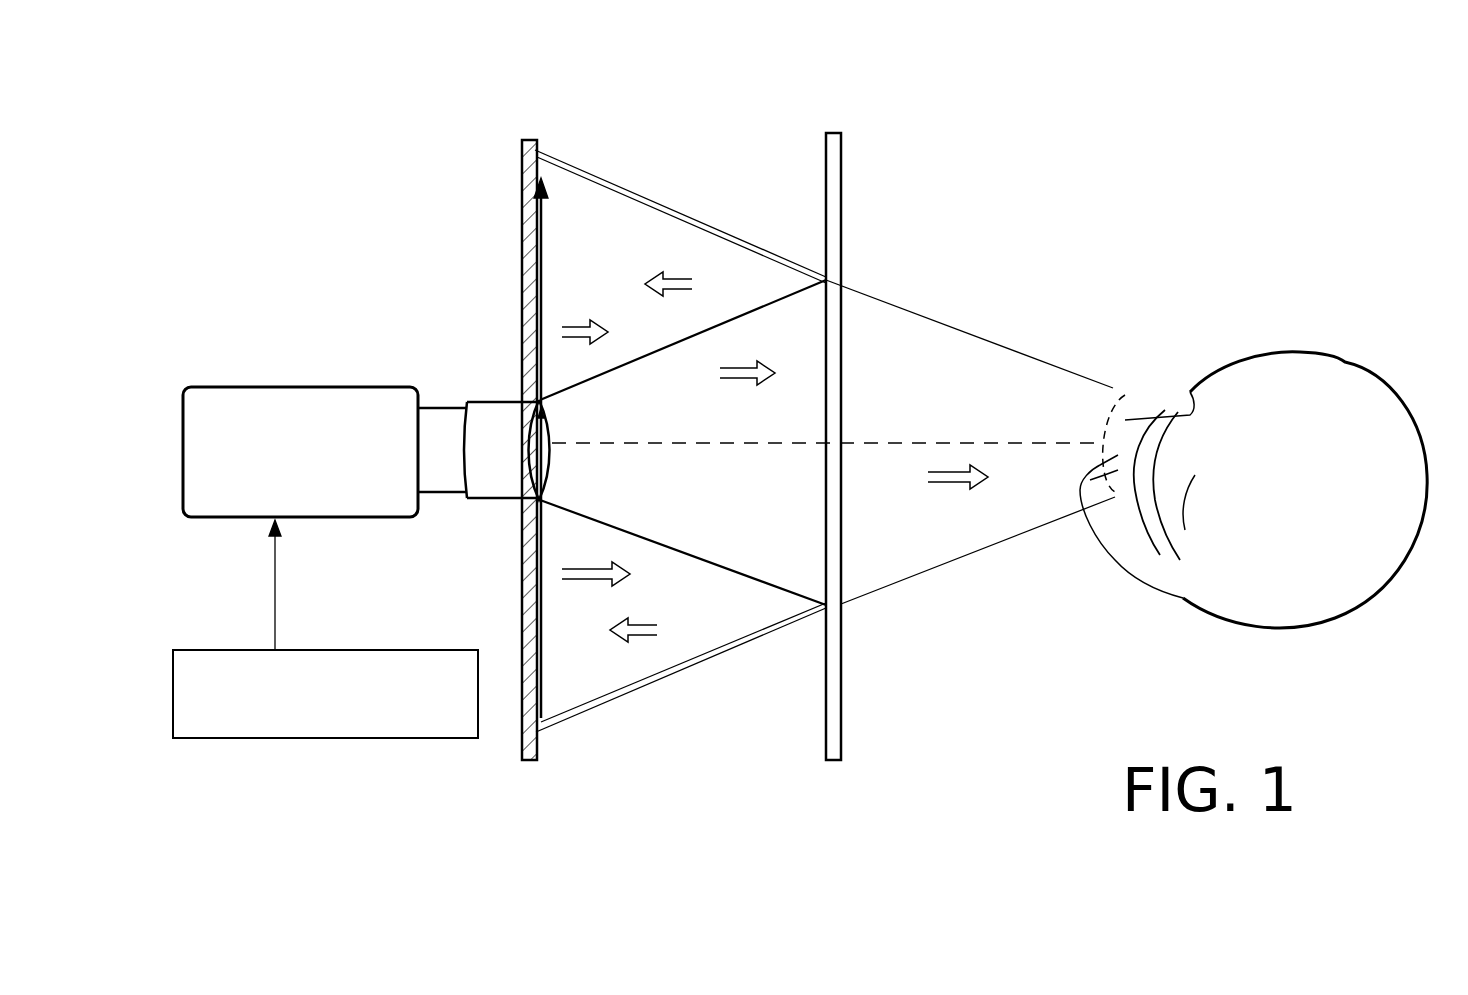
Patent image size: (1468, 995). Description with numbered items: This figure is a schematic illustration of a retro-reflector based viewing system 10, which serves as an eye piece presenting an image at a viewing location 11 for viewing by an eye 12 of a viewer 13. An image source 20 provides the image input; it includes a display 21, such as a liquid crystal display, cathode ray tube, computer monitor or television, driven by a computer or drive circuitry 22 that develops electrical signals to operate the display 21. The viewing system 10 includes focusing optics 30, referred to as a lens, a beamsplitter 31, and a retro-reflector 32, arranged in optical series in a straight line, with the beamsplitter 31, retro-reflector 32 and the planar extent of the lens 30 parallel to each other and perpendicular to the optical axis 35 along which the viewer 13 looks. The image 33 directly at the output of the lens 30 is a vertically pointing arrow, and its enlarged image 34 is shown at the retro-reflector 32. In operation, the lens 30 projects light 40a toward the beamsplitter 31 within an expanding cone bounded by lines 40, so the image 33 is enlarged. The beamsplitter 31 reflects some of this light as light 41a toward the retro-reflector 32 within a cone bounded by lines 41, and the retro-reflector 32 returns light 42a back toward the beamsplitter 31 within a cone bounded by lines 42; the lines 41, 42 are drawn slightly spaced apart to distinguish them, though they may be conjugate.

The viewing system 10 is at (1013, 190).
The viewing location 11 is at (1123, 398).
The eye 12 is at (1142, 408).
The viewer 13 is at (1425, 440).
The image source 20 is at (430, 328).
The display 21 is at (183, 418).
The computer or drive circuitry 22 is at (205, 650).
The focusing optics 30 is at (553, 438).
The beamsplitter 31 is at (826, 183).
The retro-reflector 32 is at (538, 142).
The image 33 is at (550, 468).
The enlarged image 34 is at (543, 265).
The optical axis 35 is at (987, 440).
The lines 40 is at (695, 345).
The projected light 40a is at (748, 386).
The lines 41 is at (632, 215).
The light 41a is at (685, 277).
The lines 42 is at (702, 225).
The light 42a is at (610, 320).